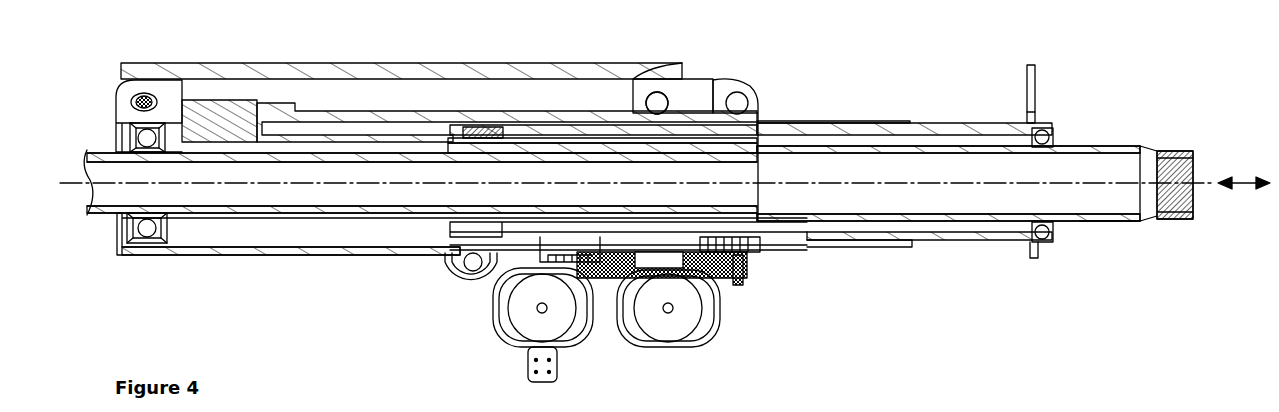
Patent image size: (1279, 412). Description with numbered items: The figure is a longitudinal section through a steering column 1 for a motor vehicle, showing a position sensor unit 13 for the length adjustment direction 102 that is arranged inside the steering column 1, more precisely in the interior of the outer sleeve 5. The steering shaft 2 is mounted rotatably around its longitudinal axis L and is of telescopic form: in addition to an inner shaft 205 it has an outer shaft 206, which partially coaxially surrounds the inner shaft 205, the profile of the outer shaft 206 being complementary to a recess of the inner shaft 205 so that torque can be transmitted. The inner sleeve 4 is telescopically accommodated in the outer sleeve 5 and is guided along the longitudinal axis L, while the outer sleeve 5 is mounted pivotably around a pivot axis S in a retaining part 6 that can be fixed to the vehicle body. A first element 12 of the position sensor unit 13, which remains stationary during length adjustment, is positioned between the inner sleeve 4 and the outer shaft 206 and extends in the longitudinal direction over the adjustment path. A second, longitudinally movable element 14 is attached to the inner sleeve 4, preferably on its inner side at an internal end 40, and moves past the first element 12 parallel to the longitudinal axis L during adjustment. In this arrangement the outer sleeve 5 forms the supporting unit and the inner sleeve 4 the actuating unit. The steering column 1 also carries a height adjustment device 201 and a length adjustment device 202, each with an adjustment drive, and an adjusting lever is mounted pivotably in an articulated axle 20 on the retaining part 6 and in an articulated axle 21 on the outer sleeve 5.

The steering column 1 is at (876, 61).
The steering shaft 2 is at (1082, 143).
The inner sleeve 4 is at (962, 122).
The outer sleeve 5 is at (356, 118).
The retaining part 6 is at (570, 72).
The first element 12 is at (206, 117).
The position sensor unit 13 is at (481, 128).
The second element 14 is at (490, 132).
The articulated axle 20 is at (661, 99).
The articulated axle 21 is at (742, 100).
The internal end 40 is at (459, 130).
The adjustment direction 102 is at (436, 131).
The height adjustment device 201 is at (494, 350).
The length adjustment device 202 is at (733, 328).
The inner shaft 205 is at (334, 214).
The outer shaft 206 is at (1100, 223).
The pivot axis S is at (143, 94).
The longitudinal axis L is at (1110, 181).